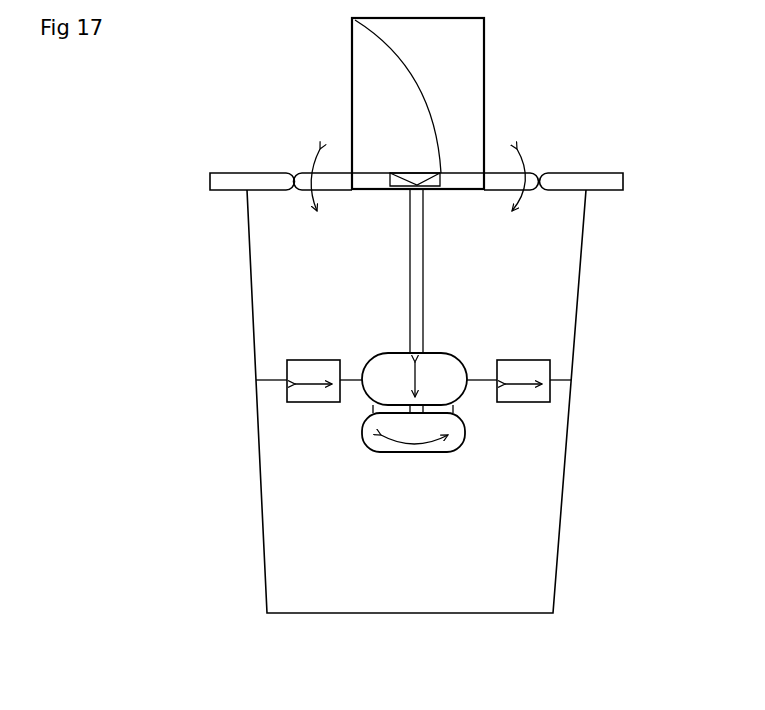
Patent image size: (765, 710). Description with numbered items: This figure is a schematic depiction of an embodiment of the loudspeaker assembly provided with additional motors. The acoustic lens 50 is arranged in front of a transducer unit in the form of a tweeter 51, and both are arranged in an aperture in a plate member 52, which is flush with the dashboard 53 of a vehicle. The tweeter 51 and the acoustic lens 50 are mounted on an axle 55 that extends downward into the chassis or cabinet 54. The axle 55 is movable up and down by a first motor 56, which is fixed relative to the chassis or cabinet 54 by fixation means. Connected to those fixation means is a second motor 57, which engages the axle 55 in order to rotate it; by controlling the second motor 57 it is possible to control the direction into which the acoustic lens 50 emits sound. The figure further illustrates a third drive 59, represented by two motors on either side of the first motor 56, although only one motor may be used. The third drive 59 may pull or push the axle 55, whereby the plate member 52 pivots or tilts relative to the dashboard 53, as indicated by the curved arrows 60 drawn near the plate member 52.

The acoustic lens 50 is at (460, 70).
The tweeter 51 is at (413, 177).
The plate member 52 is at (493, 182).
The dashboard 53 is at (560, 182).
The chassis or cabinet 54 is at (525, 277).
The axle 55 is at (415, 272).
The first motor 56 is at (440, 375).
The second motor 57 is at (440, 425).
The third drive 59 is at (312, 380).
The arrows 60 is at (318, 193).